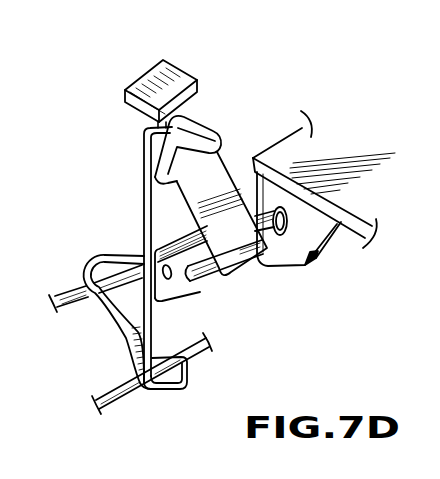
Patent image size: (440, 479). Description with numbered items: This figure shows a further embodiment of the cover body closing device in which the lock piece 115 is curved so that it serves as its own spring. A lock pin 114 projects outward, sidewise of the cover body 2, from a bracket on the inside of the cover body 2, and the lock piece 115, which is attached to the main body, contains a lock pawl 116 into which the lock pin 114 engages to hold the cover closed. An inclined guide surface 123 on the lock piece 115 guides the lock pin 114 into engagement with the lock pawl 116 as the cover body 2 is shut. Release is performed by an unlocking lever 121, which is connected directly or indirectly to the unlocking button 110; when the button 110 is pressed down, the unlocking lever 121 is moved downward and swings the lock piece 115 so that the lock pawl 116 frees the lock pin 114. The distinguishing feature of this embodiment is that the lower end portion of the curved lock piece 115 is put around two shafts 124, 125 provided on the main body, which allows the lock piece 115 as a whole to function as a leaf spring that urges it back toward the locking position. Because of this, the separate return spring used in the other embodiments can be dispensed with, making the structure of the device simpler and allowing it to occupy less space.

The cover body 2 is at (283, 142).
The unlocking button 110 is at (177, 73).
The lock pin 114 is at (208, 283).
The lock piece 115 is at (158, 205).
The lock pawl 116 is at (238, 272).
The unlocking lever 121 is at (207, 132).
The guide surface 123 is at (262, 258).
The shaft 124 is at (63, 293).
The shaft 125 is at (124, 400).